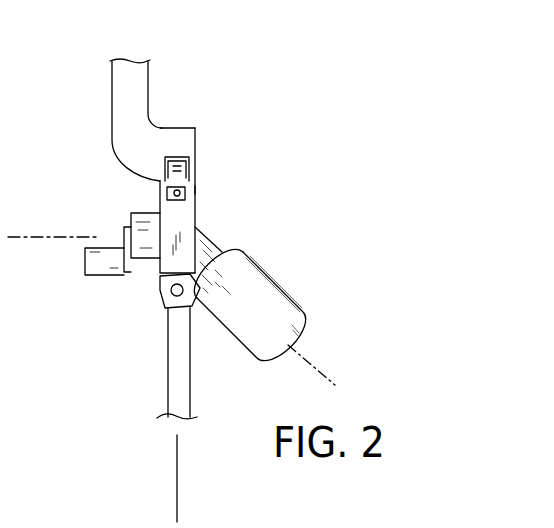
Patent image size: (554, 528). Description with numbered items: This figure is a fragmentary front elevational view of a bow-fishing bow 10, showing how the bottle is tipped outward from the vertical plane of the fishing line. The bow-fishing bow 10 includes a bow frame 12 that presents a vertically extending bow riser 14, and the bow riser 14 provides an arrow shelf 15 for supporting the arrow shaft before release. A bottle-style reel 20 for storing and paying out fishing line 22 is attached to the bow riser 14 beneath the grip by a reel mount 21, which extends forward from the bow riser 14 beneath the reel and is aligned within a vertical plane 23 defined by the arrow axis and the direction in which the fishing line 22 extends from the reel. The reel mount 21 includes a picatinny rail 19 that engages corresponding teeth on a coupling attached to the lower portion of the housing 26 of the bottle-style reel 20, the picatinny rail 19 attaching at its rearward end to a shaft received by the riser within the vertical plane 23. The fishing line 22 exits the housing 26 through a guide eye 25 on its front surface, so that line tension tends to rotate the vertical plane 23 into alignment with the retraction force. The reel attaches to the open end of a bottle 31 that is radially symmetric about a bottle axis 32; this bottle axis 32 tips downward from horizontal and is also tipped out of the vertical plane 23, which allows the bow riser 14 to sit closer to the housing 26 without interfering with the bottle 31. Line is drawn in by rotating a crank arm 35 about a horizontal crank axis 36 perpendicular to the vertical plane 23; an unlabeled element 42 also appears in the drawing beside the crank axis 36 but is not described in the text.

The bow-fishing bow 10 is at (232, 45).
The bow frame 12 is at (132, 72).
The bow riser 14 is at (187, 145).
The arrow shelf 15 is at (187, 127).
The picatinny rail 19 is at (160, 289).
The bottle-style reel 20 is at (236, 194).
The reel mount 21 is at (203, 346).
The fishing line 22 is at (167, 193).
The vertical plane 23 is at (176, 455).
The guide eye 25 is at (197, 190).
The housing 26 is at (183, 217).
The bottle 31 is at (277, 293).
The bottle axis 32 is at (303, 357).
The crank arm 35 is at (122, 235).
The crank axis 36 is at (33, 240).
The coupling 42 is at (84, 259).